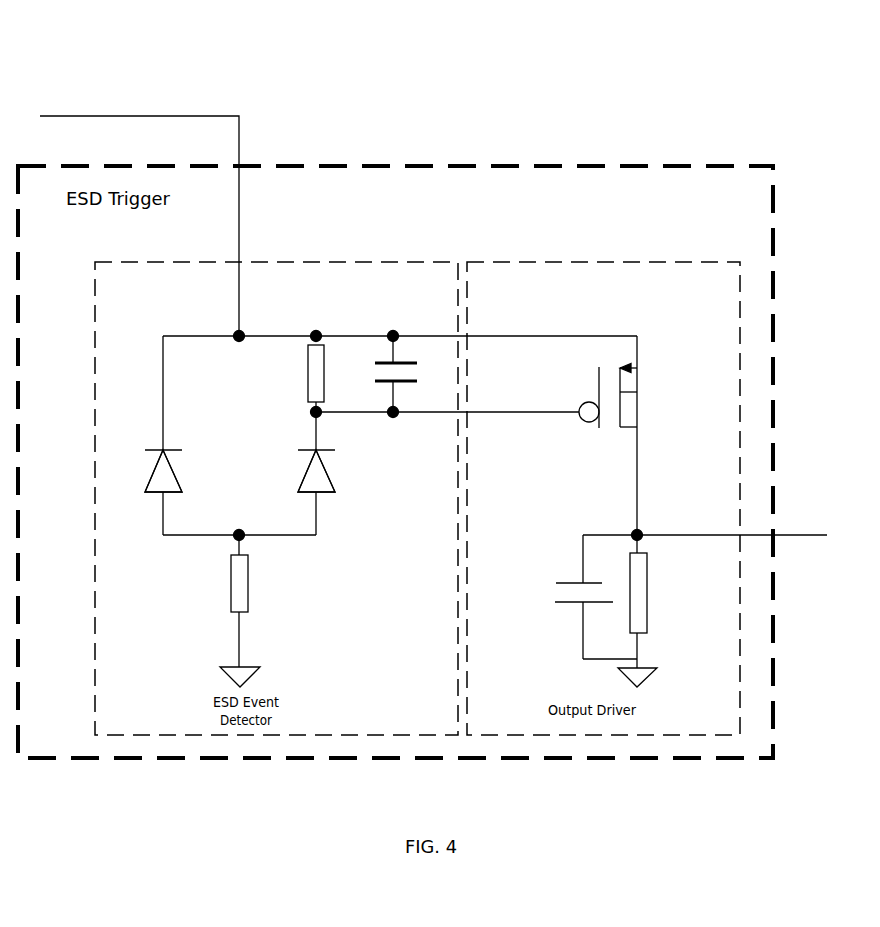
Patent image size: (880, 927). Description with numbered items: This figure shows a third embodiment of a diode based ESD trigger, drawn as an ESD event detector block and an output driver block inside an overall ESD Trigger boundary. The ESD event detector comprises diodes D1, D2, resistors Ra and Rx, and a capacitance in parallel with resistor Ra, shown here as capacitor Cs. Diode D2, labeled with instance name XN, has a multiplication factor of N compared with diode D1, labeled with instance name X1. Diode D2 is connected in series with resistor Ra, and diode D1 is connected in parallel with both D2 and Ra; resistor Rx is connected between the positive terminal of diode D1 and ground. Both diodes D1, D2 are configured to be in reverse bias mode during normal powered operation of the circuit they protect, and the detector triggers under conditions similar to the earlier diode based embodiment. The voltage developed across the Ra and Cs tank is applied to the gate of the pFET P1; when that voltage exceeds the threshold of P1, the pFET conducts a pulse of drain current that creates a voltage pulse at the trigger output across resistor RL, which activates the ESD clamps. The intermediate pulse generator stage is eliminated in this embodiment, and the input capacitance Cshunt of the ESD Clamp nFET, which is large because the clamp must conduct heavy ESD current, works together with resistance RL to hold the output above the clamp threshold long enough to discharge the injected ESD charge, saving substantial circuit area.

The diode D1 is at (153, 471).
The first diode instance X1 is at (158, 485).
The diode D2 is at (306, 471).
The Nth diode instance XN is at (307, 480).
The resistor Ra is at (330, 373).
The capacitor Cs is at (410, 374).
The resistor Rx is at (250, 611).
The pFET P1 is at (622, 435).
The input capacitance Cshunt is at (585, 597).
The resistor RL is at (647, 611).